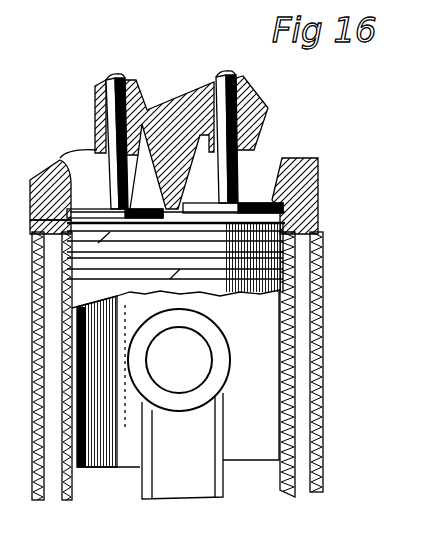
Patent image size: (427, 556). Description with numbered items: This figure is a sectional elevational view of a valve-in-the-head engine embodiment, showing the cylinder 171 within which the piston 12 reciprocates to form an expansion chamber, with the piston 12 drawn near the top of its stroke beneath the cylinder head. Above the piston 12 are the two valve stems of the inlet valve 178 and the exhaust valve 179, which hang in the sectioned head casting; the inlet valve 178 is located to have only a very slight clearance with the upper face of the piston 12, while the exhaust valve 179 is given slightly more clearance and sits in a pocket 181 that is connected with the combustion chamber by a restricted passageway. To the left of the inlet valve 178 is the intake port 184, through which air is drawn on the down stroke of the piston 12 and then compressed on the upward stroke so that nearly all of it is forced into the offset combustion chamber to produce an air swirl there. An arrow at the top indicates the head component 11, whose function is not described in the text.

The cylinder head 11 is at (145, 0).
The piston 12 is at (252, 326).
The cylinder 171 is at (72, 496).
The inlet valve 178 is at (108, 173).
The exhaust valve 179 is at (239, 172).
The pocket 181 is at (283, 210).
The intake port 184 is at (64, 157).